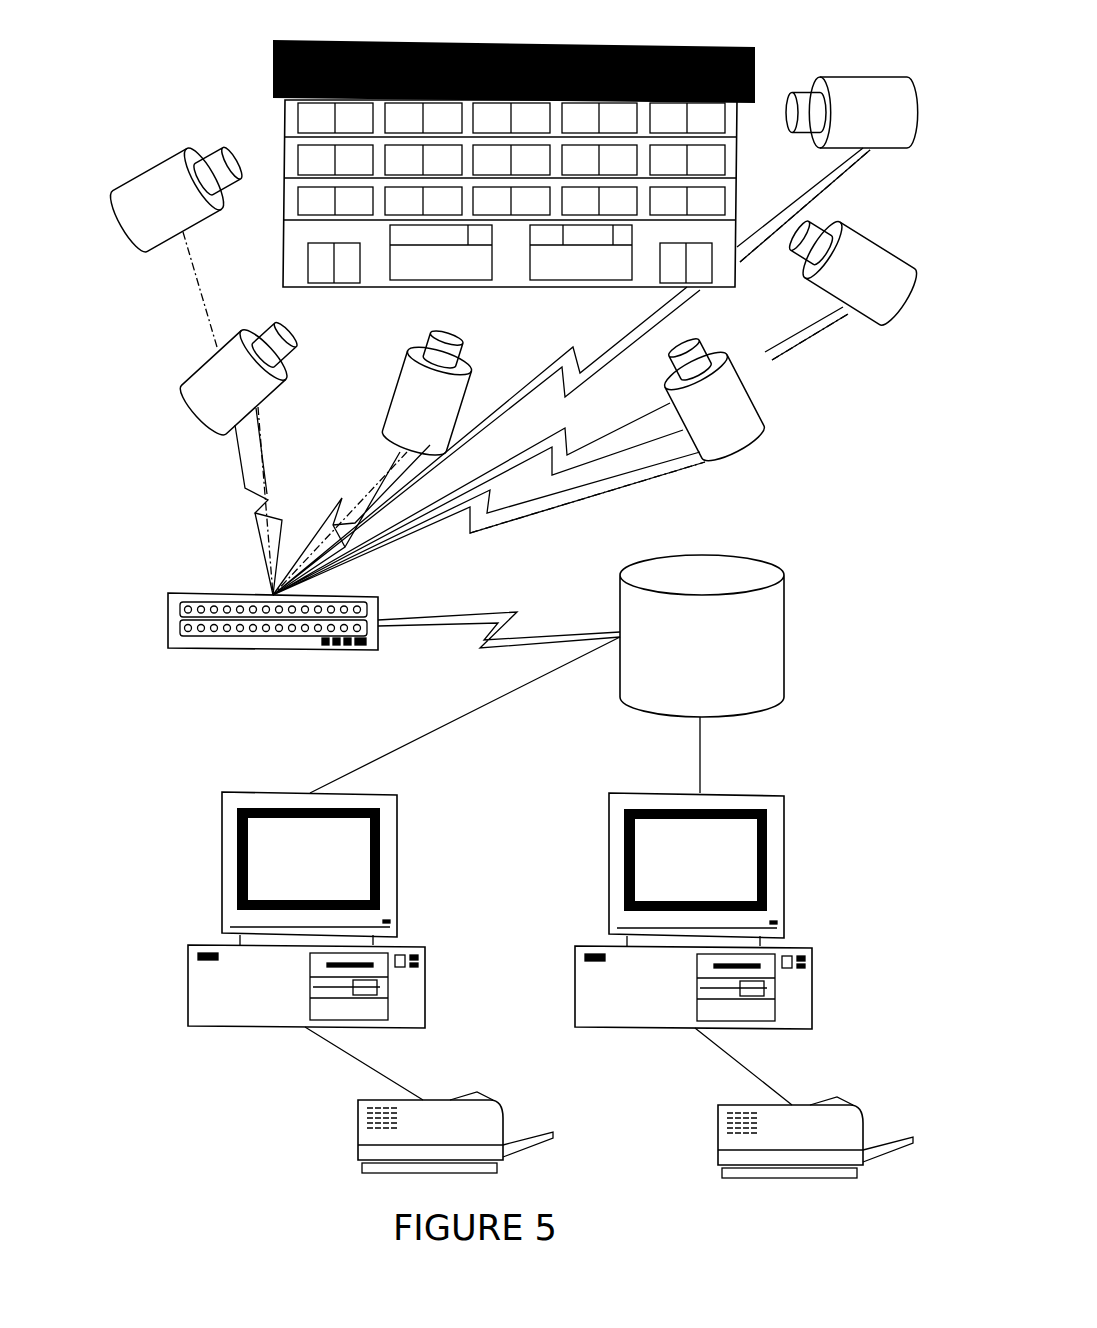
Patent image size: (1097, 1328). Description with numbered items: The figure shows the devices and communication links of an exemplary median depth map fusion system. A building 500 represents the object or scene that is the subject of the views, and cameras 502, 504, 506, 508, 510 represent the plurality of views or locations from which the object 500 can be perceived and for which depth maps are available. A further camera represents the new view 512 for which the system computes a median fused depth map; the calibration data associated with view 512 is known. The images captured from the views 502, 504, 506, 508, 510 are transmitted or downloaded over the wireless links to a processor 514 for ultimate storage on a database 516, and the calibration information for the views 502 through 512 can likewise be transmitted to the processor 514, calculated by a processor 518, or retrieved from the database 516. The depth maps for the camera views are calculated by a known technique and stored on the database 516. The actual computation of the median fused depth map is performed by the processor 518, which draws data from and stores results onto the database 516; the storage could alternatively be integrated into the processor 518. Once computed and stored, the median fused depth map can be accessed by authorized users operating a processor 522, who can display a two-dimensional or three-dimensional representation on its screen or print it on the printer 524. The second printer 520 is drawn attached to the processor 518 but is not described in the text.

The building 500 is at (723, 44).
The camera 502 is at (133, 180).
The camera 504 is at (183, 387).
The camera 506 is at (383, 418).
The camera 508 is at (758, 405).
The camera 510 is at (853, 228).
The view 512 is at (850, 75).
The processor 514 is at (357, 597).
The database 516 is at (755, 555).
The processor 518 is at (753, 793).
The printer 520 is at (853, 1105).
The processor 522 is at (387, 793).
The printer 524 is at (487, 1100).